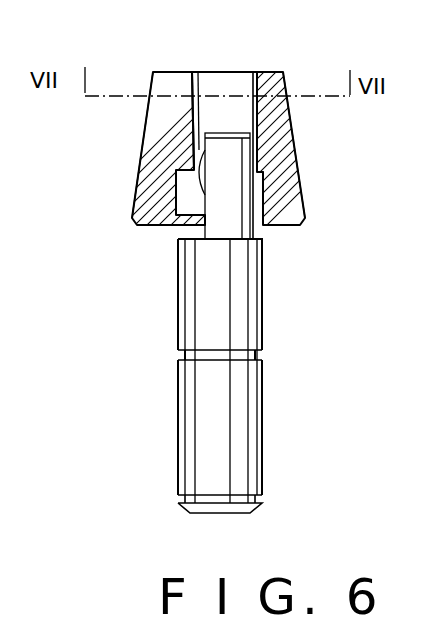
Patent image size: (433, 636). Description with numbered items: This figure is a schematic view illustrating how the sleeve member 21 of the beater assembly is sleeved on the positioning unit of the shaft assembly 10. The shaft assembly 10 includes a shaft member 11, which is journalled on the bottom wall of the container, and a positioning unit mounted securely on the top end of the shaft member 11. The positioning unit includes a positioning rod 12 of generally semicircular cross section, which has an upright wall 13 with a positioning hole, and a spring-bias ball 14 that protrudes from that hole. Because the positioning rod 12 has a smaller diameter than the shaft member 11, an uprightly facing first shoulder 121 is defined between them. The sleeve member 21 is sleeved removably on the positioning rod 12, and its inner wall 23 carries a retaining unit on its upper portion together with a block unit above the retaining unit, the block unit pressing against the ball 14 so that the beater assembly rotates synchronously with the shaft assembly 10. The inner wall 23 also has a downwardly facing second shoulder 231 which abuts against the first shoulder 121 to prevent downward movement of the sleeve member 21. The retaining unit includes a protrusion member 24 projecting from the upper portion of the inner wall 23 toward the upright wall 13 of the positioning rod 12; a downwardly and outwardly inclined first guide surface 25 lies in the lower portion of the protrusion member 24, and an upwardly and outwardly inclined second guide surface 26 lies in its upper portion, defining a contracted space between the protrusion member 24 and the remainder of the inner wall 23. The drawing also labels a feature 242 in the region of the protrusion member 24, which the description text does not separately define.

The shaft assembly 10 is at (180, 314).
The shaft member 11 is at (262, 352).
The positioning rod 12 is at (221, 128).
The first shoulder 121 is at (263, 238).
The upright wall 13 is at (182, 220).
The spring-bias ball 14 is at (219, 160).
The sleeve member 21 is at (295, 152).
The inner wall 23 is at (262, 117).
The second shoulder 231 is at (260, 167).
The top edge of bore 242 is at (228, 120).
The protrusion member 24 is at (192, 112).
The first guide surface 25 is at (147, 144).
The second guide surface 26 is at (200, 96).